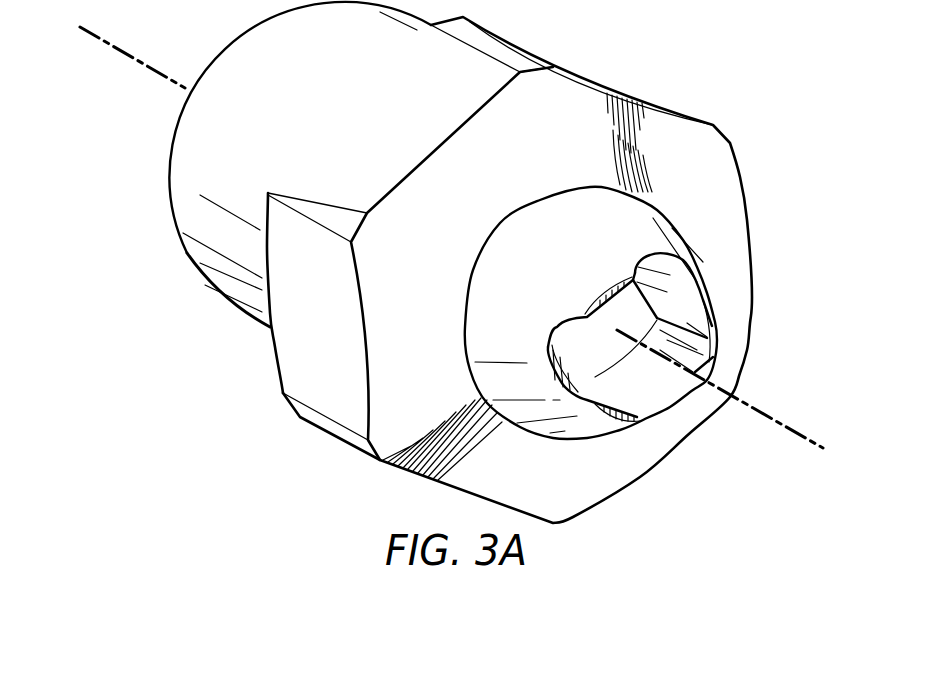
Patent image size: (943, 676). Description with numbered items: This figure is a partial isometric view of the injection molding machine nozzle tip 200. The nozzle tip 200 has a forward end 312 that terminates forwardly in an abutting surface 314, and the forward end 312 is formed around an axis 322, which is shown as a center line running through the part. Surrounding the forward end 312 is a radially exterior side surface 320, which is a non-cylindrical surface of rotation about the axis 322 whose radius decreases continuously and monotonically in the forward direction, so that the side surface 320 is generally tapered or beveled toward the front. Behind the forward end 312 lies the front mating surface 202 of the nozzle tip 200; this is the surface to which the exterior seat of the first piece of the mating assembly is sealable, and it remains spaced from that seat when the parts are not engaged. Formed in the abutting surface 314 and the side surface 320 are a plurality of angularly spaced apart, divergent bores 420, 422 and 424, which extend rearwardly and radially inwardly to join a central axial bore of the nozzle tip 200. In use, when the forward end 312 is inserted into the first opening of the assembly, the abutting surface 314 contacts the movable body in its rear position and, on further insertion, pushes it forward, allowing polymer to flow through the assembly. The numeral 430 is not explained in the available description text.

The injection molding machine nozzle tip 200 is at (288, 343).
The front mating surface 202 is at (628, 462).
The forward end 312 is at (495, 215).
The abutting surface 314 is at (707, 335).
The radially exterior side surface 320 is at (638, 223).
The axis 322 is at (771, 417).
The divergent bore 420 is at (672, 283).
The divergent bore 422 is at (648, 390).
The divergent bore 424 is at (581, 388).
The chamfered edge of opening 430 is at (548, 196).